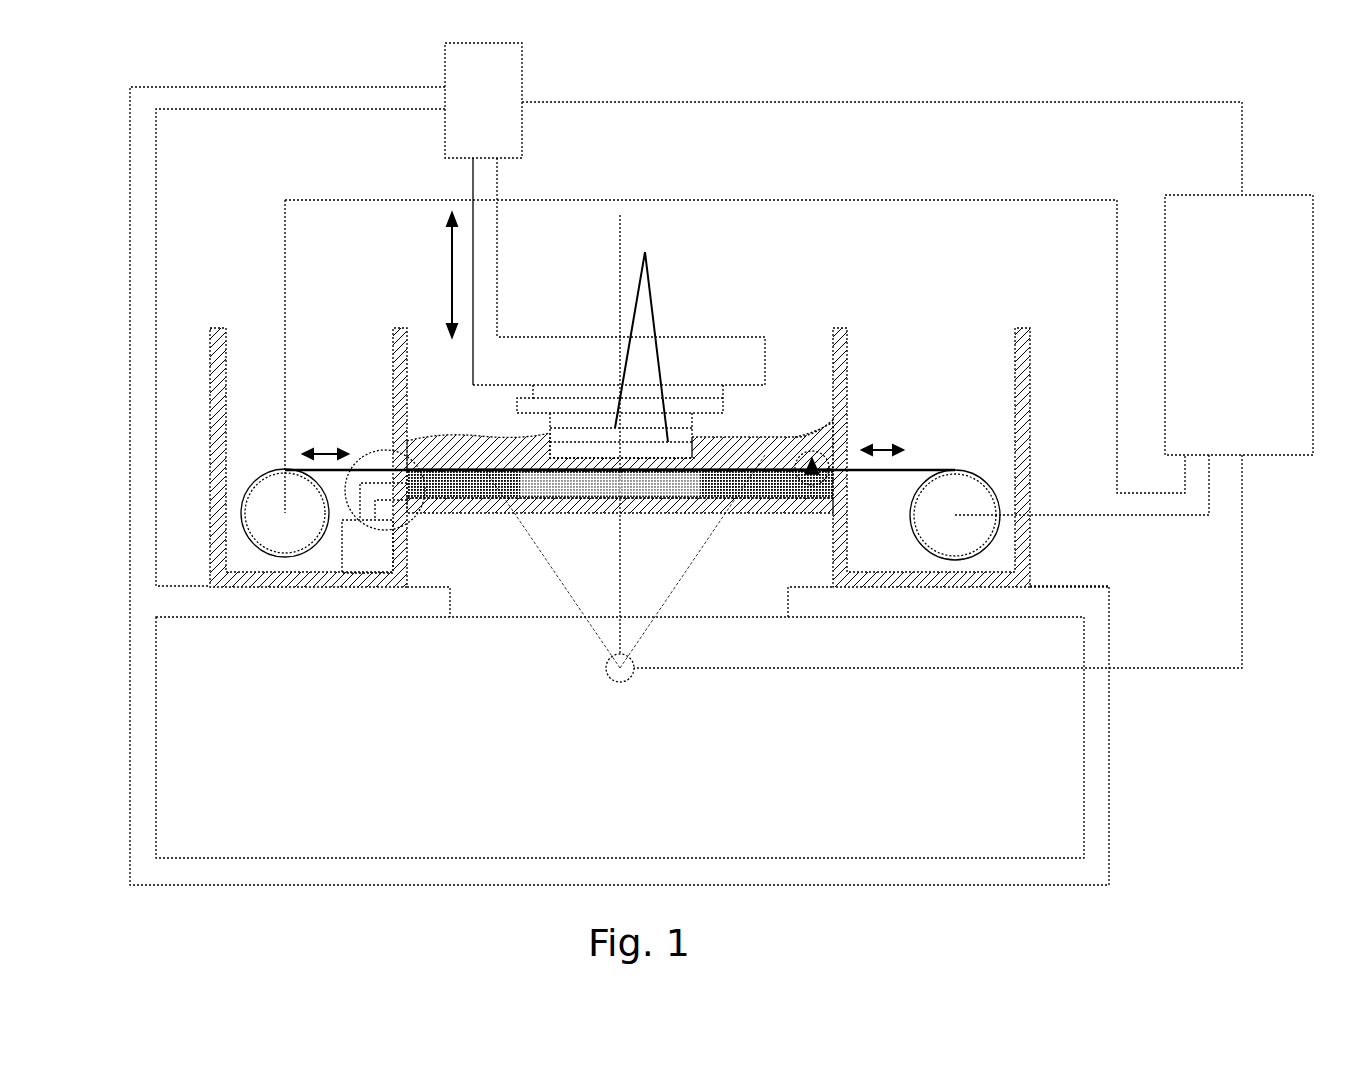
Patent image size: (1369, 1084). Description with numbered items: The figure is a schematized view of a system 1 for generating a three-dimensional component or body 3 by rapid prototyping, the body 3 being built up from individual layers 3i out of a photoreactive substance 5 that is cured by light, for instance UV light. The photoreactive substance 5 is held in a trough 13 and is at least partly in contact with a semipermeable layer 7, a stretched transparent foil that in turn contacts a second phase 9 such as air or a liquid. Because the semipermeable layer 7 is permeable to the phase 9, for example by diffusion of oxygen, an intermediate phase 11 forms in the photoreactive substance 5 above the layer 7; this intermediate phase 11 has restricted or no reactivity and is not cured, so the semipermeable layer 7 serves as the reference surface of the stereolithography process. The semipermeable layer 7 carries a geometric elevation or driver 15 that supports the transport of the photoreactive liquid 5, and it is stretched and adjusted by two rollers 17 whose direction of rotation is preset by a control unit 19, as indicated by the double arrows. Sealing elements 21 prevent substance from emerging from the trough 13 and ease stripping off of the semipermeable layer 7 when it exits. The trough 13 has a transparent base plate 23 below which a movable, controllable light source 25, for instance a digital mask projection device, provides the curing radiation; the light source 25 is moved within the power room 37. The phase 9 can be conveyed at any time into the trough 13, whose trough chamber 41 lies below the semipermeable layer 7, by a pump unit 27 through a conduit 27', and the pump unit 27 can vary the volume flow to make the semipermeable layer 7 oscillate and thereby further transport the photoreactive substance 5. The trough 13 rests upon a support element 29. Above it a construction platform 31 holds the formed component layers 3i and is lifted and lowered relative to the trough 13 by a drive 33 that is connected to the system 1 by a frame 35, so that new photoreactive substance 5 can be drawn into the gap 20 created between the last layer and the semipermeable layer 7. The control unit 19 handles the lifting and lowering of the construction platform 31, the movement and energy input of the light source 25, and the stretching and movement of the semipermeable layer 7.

The system 1 is at (1128, 782).
The three-dimensional component or body 3 is at (707, 427).
The individual layers 3i is at (641, 331).
The photoreactive substance 5 is at (797, 440).
The semipermeable layer 7 is at (910, 468).
The second phase 9 is at (775, 482).
The intermediate phase 11 is at (707, 468).
The trough 13 is at (855, 322).
The driver 15 is at (823, 452).
The rollers 17 is at (958, 500).
The control unit 19 is at (1223, 340).
The gap 20 is at (563, 455).
The sealing elements 21 is at (403, 472).
The transparent base plate 23 is at (575, 500).
The light source 25 is at (613, 677).
The pump unit 27 is at (367, 546).
The conduit 27' is at (416, 593).
The support element 29 is at (1012, 595).
The construction platform 31 is at (530, 345).
The drive 33 is at (466, 114).
The frame 35 is at (145, 363).
The power room 37 is at (180, 824).
The trough chamber 41 is at (474, 494).